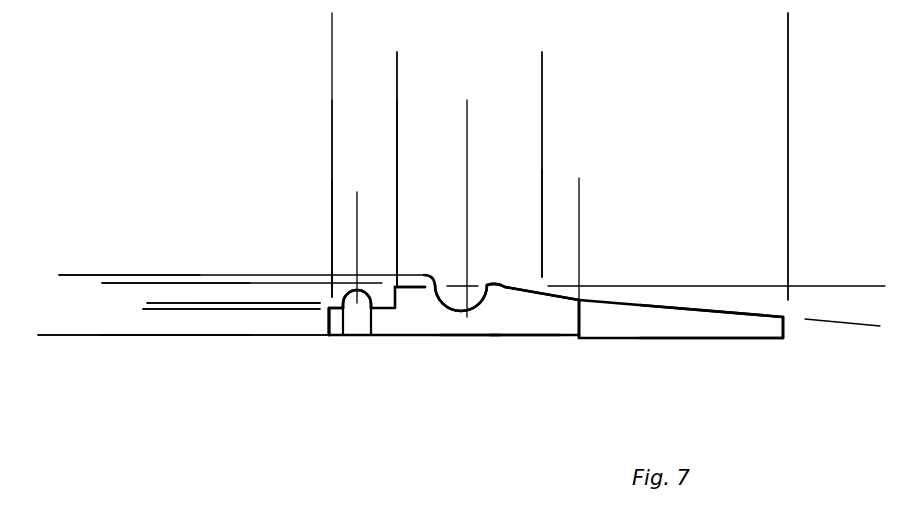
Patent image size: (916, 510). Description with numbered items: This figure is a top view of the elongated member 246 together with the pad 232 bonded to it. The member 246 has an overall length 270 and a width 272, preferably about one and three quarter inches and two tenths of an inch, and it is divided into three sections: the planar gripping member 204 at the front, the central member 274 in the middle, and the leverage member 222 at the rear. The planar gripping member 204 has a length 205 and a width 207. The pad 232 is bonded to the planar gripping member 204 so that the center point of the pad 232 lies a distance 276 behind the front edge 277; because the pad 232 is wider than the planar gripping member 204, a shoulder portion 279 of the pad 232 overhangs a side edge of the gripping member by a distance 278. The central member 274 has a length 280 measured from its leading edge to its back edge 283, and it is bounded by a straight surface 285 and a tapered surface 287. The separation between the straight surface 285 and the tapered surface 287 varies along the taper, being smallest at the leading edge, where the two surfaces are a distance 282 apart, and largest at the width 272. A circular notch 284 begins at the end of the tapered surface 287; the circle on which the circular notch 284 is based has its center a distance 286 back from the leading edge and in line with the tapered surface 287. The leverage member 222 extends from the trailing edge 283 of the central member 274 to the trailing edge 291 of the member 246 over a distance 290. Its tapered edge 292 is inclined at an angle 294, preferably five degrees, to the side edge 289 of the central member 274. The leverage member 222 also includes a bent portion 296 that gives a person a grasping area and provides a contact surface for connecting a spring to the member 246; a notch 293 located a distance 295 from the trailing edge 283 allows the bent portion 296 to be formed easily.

The length 270 is at (788, 22).
The length 280 is at (542, 64).
The distance 290 is at (788, 64).
The distance 286 is at (508, 111).
The length 205 is at (438, 159).
The distance 276 is at (388, 202).
The distance 295 is at (508, 193).
The angle 294 is at (873, 357).
The width 272 is at (61, 245).
The distance 282 is at (110, 233).
The distance 278 is at (154, 262).
The width 207 is at (218, 270).
The front edge 277 is at (328, 318).
The shoulder portion 279 is at (349, 299).
The planar gripping member 204 is at (337, 330).
The pad 232 is at (366, 346).
The tapered surface 287 is at (421, 290).
The central member 274 is at (455, 325).
The member 246 is at (472, 338).
The straight surface 285 is at (503, 338).
The circular notch 284 is at (487, 303).
The side edge 289 is at (508, 289).
The back edge 283 is at (535, 293).
The notch 293 is at (586, 318).
The tapered edge 292 is at (703, 302).
The bent portion 296 is at (703, 343).
The leverage member 222 is at (740, 326).
The trailing edge 291 is at (784, 330).